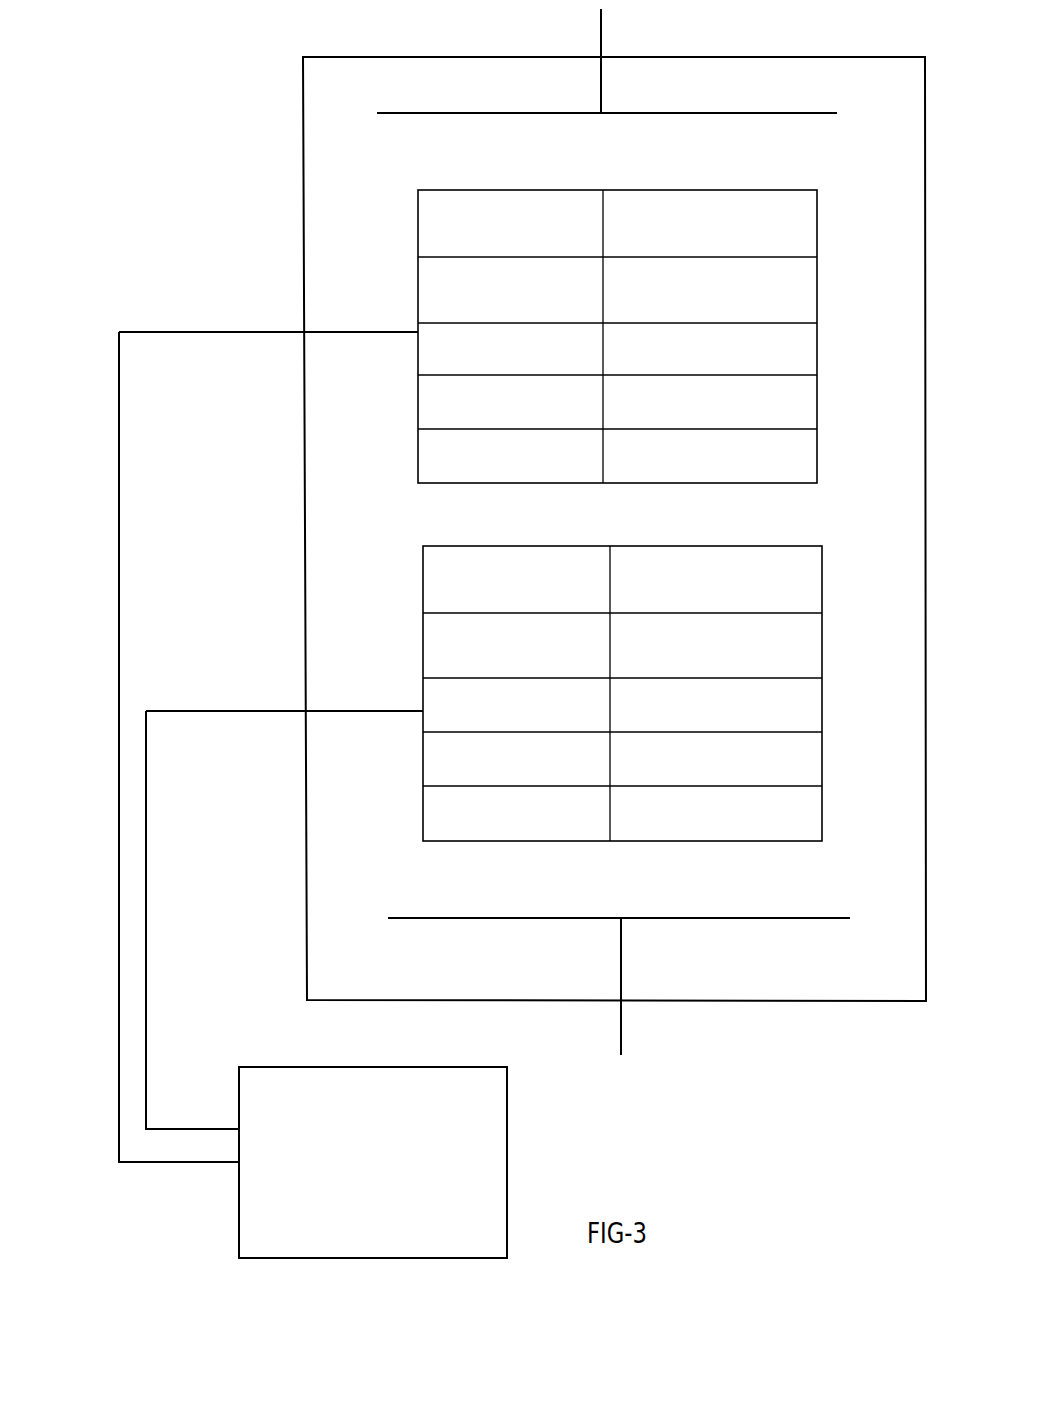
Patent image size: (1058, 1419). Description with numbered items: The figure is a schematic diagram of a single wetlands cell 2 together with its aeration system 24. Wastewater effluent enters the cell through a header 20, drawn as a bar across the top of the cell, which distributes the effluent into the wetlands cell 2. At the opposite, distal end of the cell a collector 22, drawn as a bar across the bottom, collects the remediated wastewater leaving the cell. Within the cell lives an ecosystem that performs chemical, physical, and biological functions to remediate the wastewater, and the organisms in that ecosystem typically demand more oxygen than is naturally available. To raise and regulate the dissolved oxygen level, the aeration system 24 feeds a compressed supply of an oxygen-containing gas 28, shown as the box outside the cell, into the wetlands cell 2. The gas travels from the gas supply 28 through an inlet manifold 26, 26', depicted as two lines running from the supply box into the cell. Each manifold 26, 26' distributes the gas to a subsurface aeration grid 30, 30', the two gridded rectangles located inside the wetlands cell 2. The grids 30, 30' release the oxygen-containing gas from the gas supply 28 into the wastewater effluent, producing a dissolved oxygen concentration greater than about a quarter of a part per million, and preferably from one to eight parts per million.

The wetlands cell 2 is at (260, 34).
The header 20 is at (670, 113).
The collector 22 is at (661, 920).
The aeration system 24 is at (396, 466).
The inlet manifold 26 is at (284, 673).
The inlet manifold 26' is at (268, 292).
The oxygen-containing gas supply 28 is at (373, 1162).
The subsurface aeration grid 30 is at (631, 671).
The subsurface aeration grid 30' is at (660, 347).